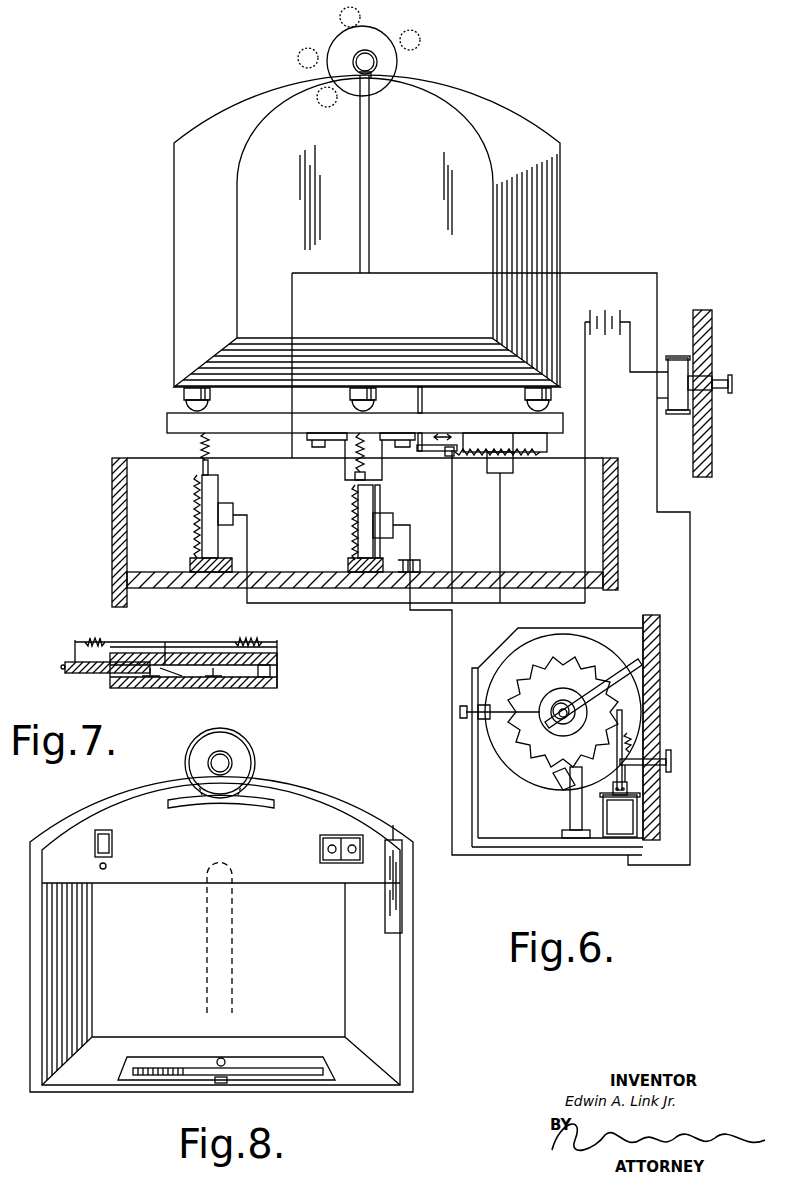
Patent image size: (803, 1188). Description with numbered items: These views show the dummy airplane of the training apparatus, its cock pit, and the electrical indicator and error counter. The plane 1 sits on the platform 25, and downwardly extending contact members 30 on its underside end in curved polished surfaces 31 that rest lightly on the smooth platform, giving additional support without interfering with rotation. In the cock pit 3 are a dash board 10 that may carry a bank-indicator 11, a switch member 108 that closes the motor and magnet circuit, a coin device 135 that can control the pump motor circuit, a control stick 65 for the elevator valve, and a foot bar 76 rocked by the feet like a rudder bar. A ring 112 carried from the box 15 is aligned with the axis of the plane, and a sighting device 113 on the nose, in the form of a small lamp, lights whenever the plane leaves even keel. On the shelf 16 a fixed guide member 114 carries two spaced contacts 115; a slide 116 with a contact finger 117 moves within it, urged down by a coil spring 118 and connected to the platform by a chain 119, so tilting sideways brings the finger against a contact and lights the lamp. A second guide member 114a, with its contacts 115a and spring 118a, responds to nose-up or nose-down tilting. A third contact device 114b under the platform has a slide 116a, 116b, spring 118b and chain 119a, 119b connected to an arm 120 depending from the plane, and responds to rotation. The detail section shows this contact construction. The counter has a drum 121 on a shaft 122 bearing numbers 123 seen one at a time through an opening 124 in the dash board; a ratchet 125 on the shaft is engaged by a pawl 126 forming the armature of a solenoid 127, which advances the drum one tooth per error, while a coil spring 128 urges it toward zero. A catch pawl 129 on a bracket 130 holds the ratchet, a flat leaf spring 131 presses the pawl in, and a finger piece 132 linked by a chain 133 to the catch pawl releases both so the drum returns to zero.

In FIG. 6, the plane 1 is at (190, 303).
In FIG. 8, the plane 1 is at (410, 1008).
In FIG. 8, the cock pit 3 is at (270, 871).
In FIG. 6, the dash board 10 is at (655, 633).
In FIG. 8, the dash board 10 is at (310, 812).
In FIG. 8, the bank-indicator 11 is at (253, 792).
In FIG. 6, the box 15 is at (112, 520).
In FIG. 6, the shelf 16 is at (533, 572).
In FIG. 6, the platform 25 is at (177, 425).
In FIG. 6, the contact members 30 is at (182, 395).
In FIG. 6, the curved polished surfaces 31 is at (210, 408).
In FIG. 8, the control stick 65 is at (205, 918).
In FIG. 8, the foot bar 76 is at (128, 1070).
In FIG. 8, the switch member 108 is at (331, 846).
In FIG. 6, the ring 112 is at (336, 46).
In FIG. 8, the ring 112 is at (250, 741).
In FIG. 6, the sighting device 113 is at (377, 63).
In FIG. 8, the sighting device 113 is at (209, 758).
In FIG. 6, the guide member 114 is at (218, 488).
In FIG. 7, the guide member 114 is at (133, 655).
In FIG. 6, the second guide member 114a is at (366, 500).
In FIG. 6, the contact device 114b is at (547, 440).
In FIG. 6, the fixed spaced contacts 115 is at (218, 526).
In FIG. 7, the fixed spaced contacts 115 is at (147, 678).
In FIG. 6, the fixed spaced contacts 115a is at (350, 515).
In FIG. 6, the slide 116 is at (202, 470).
In FIG. 7, the slide 116 is at (90, 674).
In FIG. 6, the slide 116a is at (355, 478).
In FIG. 6, the slide 116b is at (450, 456).
In FIG. 7, the contact finger 117 is at (180, 678).
In FIG. 6, the coil spring 118 is at (196, 497).
In FIG. 7, the coil spring 118 is at (250, 641).
In FIG. 6, the coil spring 118a is at (352, 525).
In FIG. 6, the coil spring 118b is at (478, 456).
In FIG. 6, the chain 119 is at (210, 450).
In FIG. 6, the chain 119a is at (352, 452).
In FIG. 6, the chain 119b is at (432, 452).
In FIG. 6, the arm 120 is at (424, 407).
In FIG. 6, the drum 121 is at (625, 695).
In FIG. 6, the shaft 122 is at (555, 718).
In FIG. 8, the numbers 123 is at (108, 828).
In FIG. 6, the opening 124 is at (650, 690).
In FIG. 6, the ratchet 125 is at (573, 672).
In FIG. 6, the pawl 126 is at (622, 720).
In FIG. 6, the solenoid 127 is at (625, 810).
In FIG. 6, the coil spring 128 is at (605, 692).
In FIG. 6, the catch pawl 129 is at (557, 782).
In FIG. 6, the bracket 130 is at (573, 815).
In FIG. 6, the flat leaf spring 131 is at (632, 745).
In FIG. 6, the finger piece 132 is at (671, 762).
In FIG. 6, the chain 133 is at (612, 800).
In FIG. 8, the coin device 135 is at (395, 900).